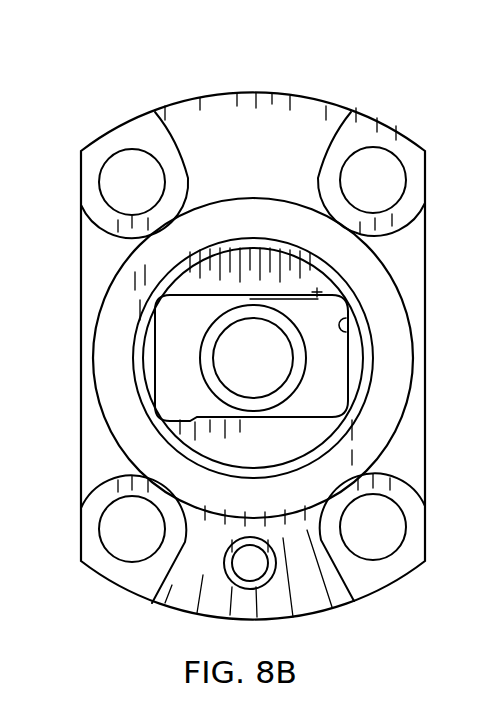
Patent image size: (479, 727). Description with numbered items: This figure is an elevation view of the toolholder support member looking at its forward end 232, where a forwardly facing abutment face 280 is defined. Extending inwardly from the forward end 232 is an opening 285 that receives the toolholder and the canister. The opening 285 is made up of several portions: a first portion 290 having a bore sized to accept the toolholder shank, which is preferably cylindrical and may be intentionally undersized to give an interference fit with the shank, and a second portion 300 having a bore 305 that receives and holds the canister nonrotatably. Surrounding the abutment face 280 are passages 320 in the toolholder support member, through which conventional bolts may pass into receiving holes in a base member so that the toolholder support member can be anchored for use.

The forward end 232 is at (86, 466).
The forwardly facing abutment face 280 is at (108, 342).
The opening 285 is at (224, 262).
The first portion 290 is at (273, 263).
The second portion 300 is at (292, 260).
The bore 305 is at (345, 310).
The passages 320 is at (117, 170).